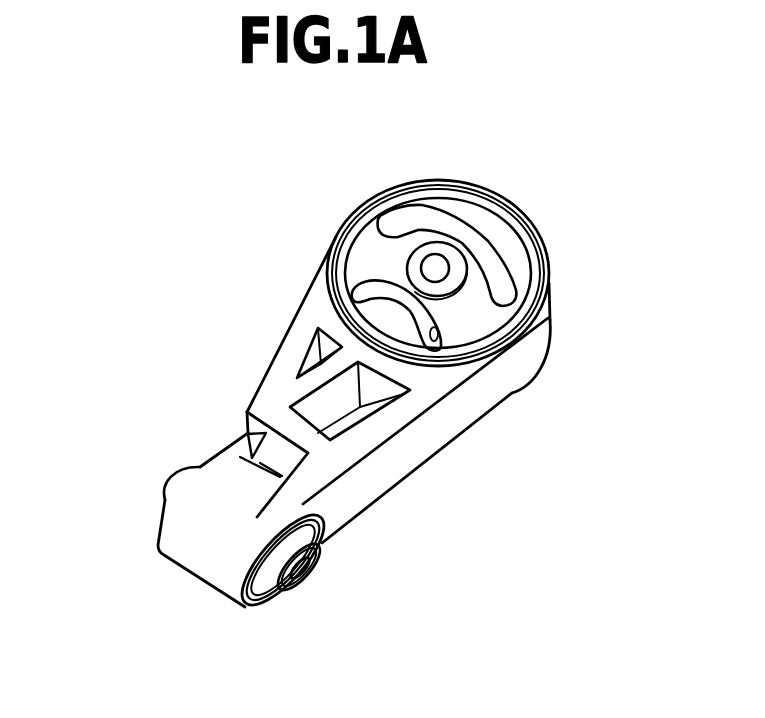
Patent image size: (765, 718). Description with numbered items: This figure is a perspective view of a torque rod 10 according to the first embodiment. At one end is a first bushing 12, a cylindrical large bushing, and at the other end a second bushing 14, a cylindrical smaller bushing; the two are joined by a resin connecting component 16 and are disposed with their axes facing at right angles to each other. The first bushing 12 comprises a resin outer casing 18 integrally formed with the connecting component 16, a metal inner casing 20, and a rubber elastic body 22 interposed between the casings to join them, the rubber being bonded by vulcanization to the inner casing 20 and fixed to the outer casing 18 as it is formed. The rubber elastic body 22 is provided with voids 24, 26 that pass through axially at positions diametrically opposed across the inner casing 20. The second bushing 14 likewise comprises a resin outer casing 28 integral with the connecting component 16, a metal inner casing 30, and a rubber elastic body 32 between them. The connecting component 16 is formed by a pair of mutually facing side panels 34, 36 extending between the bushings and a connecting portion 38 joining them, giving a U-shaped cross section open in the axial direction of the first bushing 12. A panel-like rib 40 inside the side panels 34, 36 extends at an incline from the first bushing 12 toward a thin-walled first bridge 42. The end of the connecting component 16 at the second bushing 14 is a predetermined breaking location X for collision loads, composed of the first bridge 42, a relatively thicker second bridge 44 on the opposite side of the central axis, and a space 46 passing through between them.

The torque rod 10 is at (232, 298).
The first bushing 12 is at (496, 188).
The second bushing 14 is at (180, 573).
The resin connecting component 16 is at (427, 477).
The resin outer casing 18 is at (530, 217).
The metal inner casing 20 is at (425, 242).
The rubber elastic body 22 is at (443, 203).
The void 24 is at (497, 263).
The void 26 is at (444, 351).
The resin outer casing 28 is at (214, 574).
The metal inner casing 30 is at (300, 585).
The rubber elastic body 32 is at (272, 599).
The side panel 34 is at (400, 416).
The side panel 36 is at (293, 325).
The connecting portion 38 is at (340, 427).
The rib 40 is at (310, 358).
The first bridge 42 is at (246, 428).
The second bridge 44 is at (320, 473).
The space 46 is at (186, 479).
The predetermined breaking location X is at (236, 432).